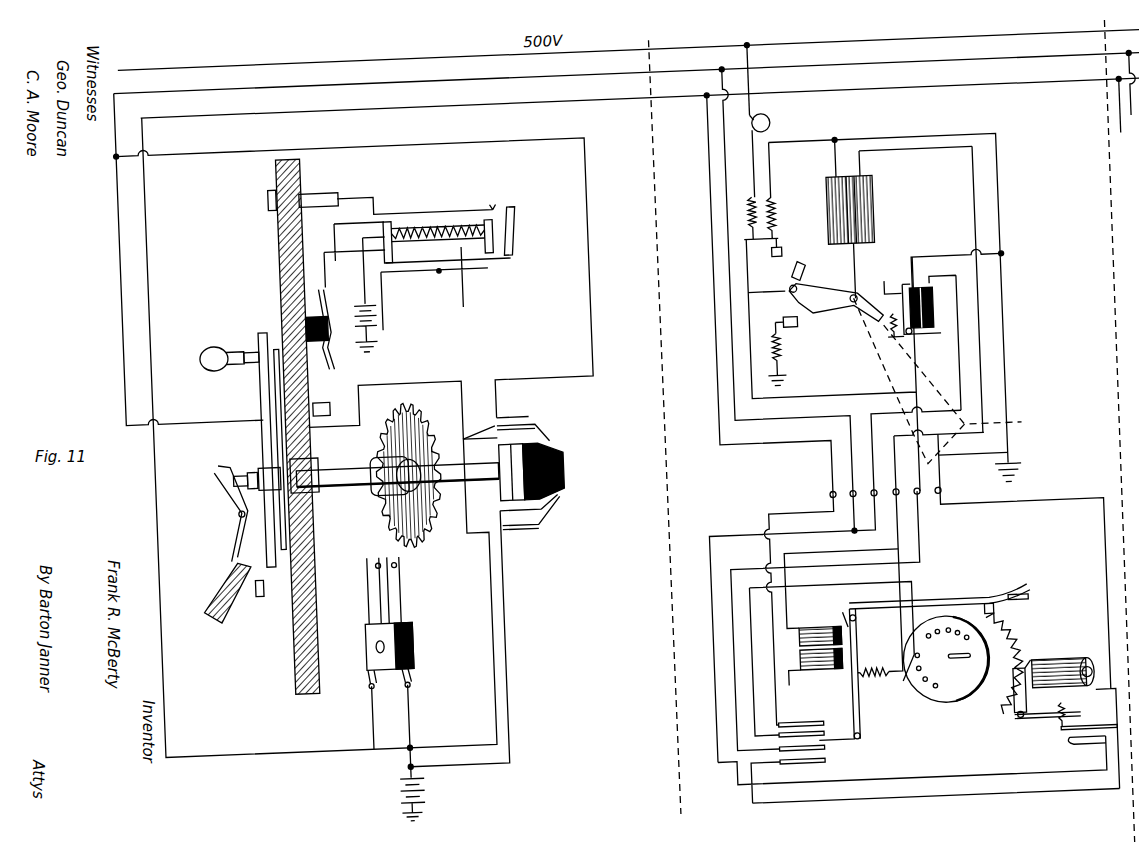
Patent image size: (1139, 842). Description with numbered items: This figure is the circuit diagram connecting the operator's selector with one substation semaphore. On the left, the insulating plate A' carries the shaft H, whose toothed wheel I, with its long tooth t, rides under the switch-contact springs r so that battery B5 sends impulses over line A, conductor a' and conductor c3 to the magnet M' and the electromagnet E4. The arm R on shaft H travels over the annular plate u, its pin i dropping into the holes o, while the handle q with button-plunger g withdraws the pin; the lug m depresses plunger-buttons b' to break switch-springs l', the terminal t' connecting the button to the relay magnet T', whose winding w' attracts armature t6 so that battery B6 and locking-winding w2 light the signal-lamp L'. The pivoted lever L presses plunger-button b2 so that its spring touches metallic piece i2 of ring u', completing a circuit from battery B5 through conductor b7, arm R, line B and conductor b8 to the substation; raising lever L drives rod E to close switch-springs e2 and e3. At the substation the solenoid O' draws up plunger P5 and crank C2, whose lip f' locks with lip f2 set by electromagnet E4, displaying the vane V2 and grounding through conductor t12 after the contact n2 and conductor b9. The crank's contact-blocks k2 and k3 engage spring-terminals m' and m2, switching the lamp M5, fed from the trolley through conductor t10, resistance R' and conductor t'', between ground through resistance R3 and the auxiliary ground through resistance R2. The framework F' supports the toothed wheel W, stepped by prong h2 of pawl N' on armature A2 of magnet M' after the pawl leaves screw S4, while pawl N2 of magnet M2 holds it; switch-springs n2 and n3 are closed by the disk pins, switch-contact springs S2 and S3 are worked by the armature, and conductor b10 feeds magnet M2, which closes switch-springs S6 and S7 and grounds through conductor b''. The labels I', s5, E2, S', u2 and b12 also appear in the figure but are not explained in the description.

The line B is at (626, 65).
The line A is at (639, 90).
The conductor b7 is at (359, 375).
The plate A' is at (307, 426).
The signal-lamp L' is at (363, 201).
The conductor I' is at (499, 184).
The relay magnet T' is at (418, 274).
The magnet winding w' is at (437, 214).
The locking-winding w2 is at (458, 243).
The armature t6 is at (516, 230).
The battery B6 is at (355, 295).
The switch-springs l' is at (325, 330).
The terminal t' is at (266, 268).
The holes o is at (268, 296).
The pin i is at (253, 313).
The metallic piece i2 is at (323, 475).
The ring u' is at (294, 452).
The annular plate u is at (271, 634).
The button-plunger g is at (188, 362).
The handle q is at (218, 329).
The plunger-button b' is at (255, 378).
The lug m is at (243, 398).
The pivoted lever L is at (218, 545).
The arm R is at (221, 439).
The rod E is at (228, 480).
The plunger-button b2 is at (254, 595).
The spring s5 is at (270, 586).
The shaft H is at (318, 481).
The toothed wheel I is at (408, 475).
The collar E2 is at (349, 511).
The long tooth t is at (373, 525).
The framework F' is at (546, 471).
The switch-springs e2 is at (509, 422).
The switch-springs e3 is at (530, 511).
The switch-contact springs r is at (390, 663).
The battery B5 is at (423, 793).
The conductor t10 is at (756, 78).
The lamp M5 is at (768, 150).
The conductor b8 is at (793, 280).
The conductor a' is at (757, 293).
The resistance R' is at (746, 218).
The resistance R2 is at (767, 191).
The spring-terminal m' is at (788, 245).
The solenoid O' is at (901, 216).
The plunger P5 is at (870, 242).
The conductor t12 is at (889, 334).
The conductor t'' is at (786, 345).
The crank C2 is at (836, 308).
The contact-block k2 is at (803, 258).
The contact-block k3 is at (811, 345).
The spring-terminal m2 is at (776, 326).
The resistance R3 is at (785, 358).
The lip f2 is at (893, 276).
The electromagnet E4 is at (923, 325).
The spring S' is at (895, 339).
The lip f' is at (870, 350).
The vane V2 is at (947, 378).
The conductor u2 is at (917, 449).
The conductor b9 is at (950, 461).
The conductor b'' is at (1096, 548).
The conductor c3 is at (817, 626).
The conductor b12 is at (901, 771).
The conductor b10 is at (897, 793).
The magnet M' is at (813, 663).
The switch-contact spring S2 is at (804, 748).
The switch-contact spring S3 is at (796, 790).
The armature A2 is at (820, 648).
The pawl N' is at (939, 594).
The screw S4 is at (1027, 584).
The switch-springs n2 is at (856, 712).
The switch-springs n3 is at (900, 664).
The toothed wheel W is at (1012, 663).
The prong h2 is at (970, 653).
The magnet M2 is at (1032, 700).
The pawl N2 is at (1029, 693).
The switch-spring S6 is at (1087, 713).
The switch-spring S7 is at (1087, 744).